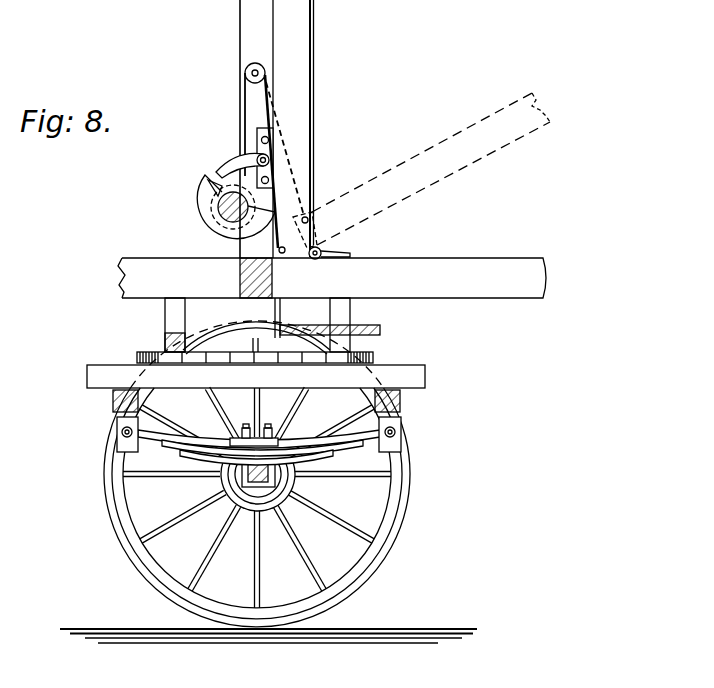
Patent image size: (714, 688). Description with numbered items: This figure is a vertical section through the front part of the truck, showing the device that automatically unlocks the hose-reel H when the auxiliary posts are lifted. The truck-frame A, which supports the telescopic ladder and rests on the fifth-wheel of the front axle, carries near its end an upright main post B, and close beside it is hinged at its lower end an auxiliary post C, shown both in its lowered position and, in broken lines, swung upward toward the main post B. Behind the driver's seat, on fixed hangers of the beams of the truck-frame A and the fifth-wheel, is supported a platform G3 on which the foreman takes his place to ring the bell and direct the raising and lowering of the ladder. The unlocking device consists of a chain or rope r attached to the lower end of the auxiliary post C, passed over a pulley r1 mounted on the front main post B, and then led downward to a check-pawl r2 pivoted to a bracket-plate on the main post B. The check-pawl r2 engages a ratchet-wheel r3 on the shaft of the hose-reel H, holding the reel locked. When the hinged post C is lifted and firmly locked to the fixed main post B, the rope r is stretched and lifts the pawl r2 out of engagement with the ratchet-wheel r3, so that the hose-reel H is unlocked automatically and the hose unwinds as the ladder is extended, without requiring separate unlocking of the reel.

The main post B is at (250, 34).
The auxiliary post C is at (305, 52).
The pulley r1 is at (255, 63).
The chain or rope r is at (241, 128).
The check-pawl r2 is at (238, 152).
The ratchet-wheel r3 is at (216, 189).
The hose-reel H is at (200, 214).
The truck-frame A is at (307, 278).
The platform G3 is at (380, 328).